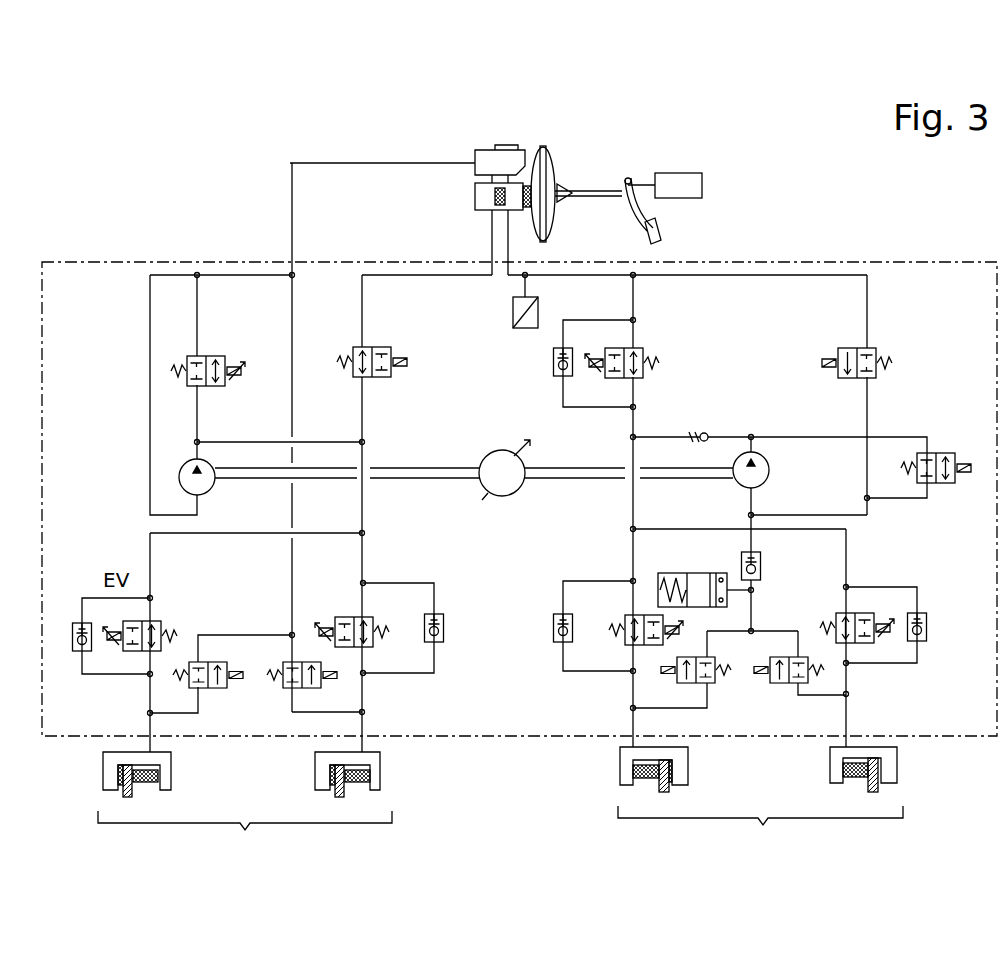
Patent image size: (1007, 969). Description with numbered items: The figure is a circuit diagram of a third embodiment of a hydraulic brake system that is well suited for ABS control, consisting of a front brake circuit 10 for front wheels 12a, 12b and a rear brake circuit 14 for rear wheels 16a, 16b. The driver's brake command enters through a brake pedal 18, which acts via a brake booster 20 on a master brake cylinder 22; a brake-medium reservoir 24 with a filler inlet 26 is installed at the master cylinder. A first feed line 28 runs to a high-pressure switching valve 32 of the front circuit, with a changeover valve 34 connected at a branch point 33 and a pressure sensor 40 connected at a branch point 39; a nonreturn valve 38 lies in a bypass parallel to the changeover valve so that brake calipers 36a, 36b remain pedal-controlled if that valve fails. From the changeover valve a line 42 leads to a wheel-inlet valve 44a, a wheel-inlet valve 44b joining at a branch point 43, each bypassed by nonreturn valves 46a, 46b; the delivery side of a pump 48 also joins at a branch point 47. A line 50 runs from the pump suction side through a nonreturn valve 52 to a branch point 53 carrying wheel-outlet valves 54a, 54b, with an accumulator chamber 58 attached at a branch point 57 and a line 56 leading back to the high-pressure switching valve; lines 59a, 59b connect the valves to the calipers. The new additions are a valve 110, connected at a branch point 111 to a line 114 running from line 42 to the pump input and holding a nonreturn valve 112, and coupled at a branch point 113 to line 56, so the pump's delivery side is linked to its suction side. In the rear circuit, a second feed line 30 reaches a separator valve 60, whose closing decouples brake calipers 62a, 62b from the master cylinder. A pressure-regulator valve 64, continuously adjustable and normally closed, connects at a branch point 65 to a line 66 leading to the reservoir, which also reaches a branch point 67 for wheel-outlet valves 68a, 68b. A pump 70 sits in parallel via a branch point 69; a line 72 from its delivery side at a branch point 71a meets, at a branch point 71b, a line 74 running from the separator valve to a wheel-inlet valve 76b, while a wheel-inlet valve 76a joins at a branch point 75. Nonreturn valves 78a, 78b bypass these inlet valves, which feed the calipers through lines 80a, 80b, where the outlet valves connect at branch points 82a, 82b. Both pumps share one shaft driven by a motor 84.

The front brake circuit 10 is at (760, 830).
The front wheel 12a is at (668, 790).
The front wheel 12b is at (878, 790).
The rear brake circuit 14 is at (245, 835).
The rear wheel 16a is at (135, 792).
The rear wheel 16b is at (348, 792).
The brake pedal 18 is at (662, 232).
The brake booster 20 is at (548, 232).
The master brake cylinder 22 is at (480, 195).
The brake-medium reservoir 24 is at (480, 160).
The filler inlet 26 is at (517, 149).
The first feed line 28 is at (800, 262).
The second feed line 30 is at (490, 222).
The high-pressure switching valve 32 is at (878, 355).
The branch point 33 is at (636, 277).
The changeover valve 34 is at (643, 355).
The brake caliper 36a is at (680, 760).
The brake caliper 36b is at (892, 758).
The nonreturn valve 38 is at (560, 378).
The branch point 39 is at (528, 277).
The pressure sensor 40 is at (525, 330).
The line 42 is at (632, 497).
The branch point 43 is at (632, 530).
The wheel-inlet valve 44a is at (648, 652).
The wheel-inlet valve 44b is at (840, 612).
The nonreturn valve 46a is at (560, 645).
The nonreturn valve 46b is at (928, 625).
The branch point 47 is at (632, 437).
The pump 48 is at (770, 477).
The line 50 is at (750, 514).
The nonreturn valve 52 is at (765, 563).
The branch point 53 is at (752, 632).
The wheel-outlet valve 54a is at (712, 690).
The wheel-outlet valve 54b is at (800, 690).
The line 56 is at (870, 520).
The branch point 57 is at (753, 592).
The accumulator chamber 58 is at (670, 573).
The line 59a is at (632, 710).
The line 59b is at (848, 712).
The separator valve 60 is at (357, 378).
The brake caliper 62a is at (105, 778).
The brake caliper 62b is at (315, 770).
The pressure-regulator valve 64 is at (193, 355).
The branch point 65 is at (293, 277).
The line 66 is at (293, 210).
The branch point 67 is at (290, 634).
The wheel-outlet valve 68a is at (215, 690).
The wheel-outlet valve 68b is at (290, 690).
The branch point 69 is at (198, 278).
The pump 70 is at (215, 488).
The branch point 71a is at (199, 441).
The branch point 71b is at (365, 443).
The line 72 is at (272, 440).
The line 74 is at (365, 503).
The branch point 75 is at (365, 535).
The wheel-inlet valve 76a is at (155, 620).
The wheel-inlet valve 76b is at (340, 616).
The nonreturn valve 78a is at (82, 621).
The nonreturn valve 78b is at (440, 630).
The line 80a is at (148, 690).
The line 80b is at (365, 690).
The branch point 82a is at (148, 715).
The branch point 82b is at (365, 713).
The motor 84 is at (515, 496).
The valve 110 is at (940, 452).
The branch point 111 is at (752, 435).
The nonreturn valve 112 is at (705, 433).
The branch point 113 is at (866, 497).
The line 114 is at (688, 435).